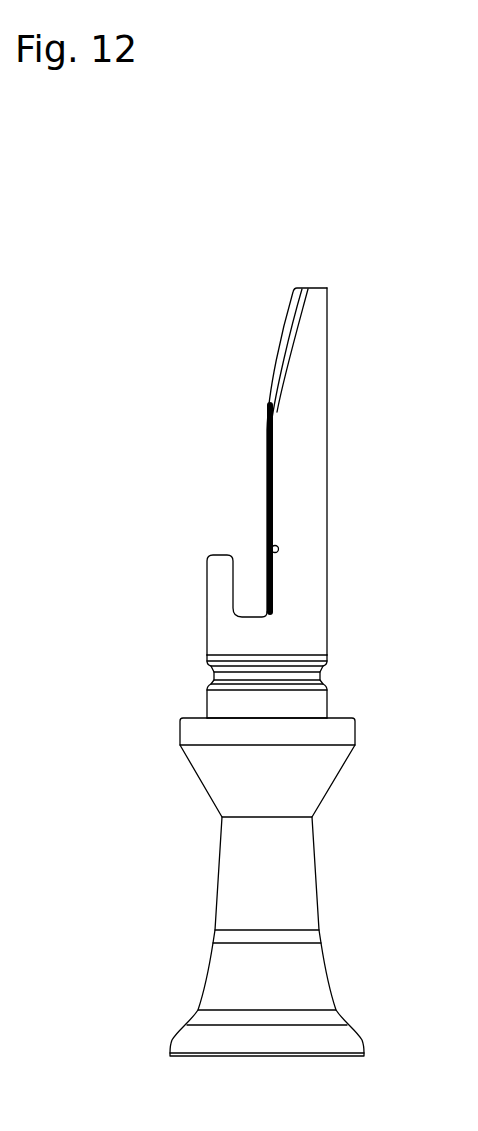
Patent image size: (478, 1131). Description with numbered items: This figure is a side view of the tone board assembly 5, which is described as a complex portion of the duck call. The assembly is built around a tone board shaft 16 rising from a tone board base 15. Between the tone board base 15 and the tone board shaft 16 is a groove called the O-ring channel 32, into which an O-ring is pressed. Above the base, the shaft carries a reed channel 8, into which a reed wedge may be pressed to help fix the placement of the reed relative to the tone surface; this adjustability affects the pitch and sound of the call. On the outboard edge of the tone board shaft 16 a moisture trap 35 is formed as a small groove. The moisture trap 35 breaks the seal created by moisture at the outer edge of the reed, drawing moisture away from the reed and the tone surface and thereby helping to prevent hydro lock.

The tone board assembly 5 is at (184, 845).
The reed channel 8 is at (243, 535).
The tone board base 15 is at (325, 770).
The tone board shaft 16 is at (300, 512).
The O-ring channel 32 is at (213, 677).
The moisture trap 35 is at (282, 549).